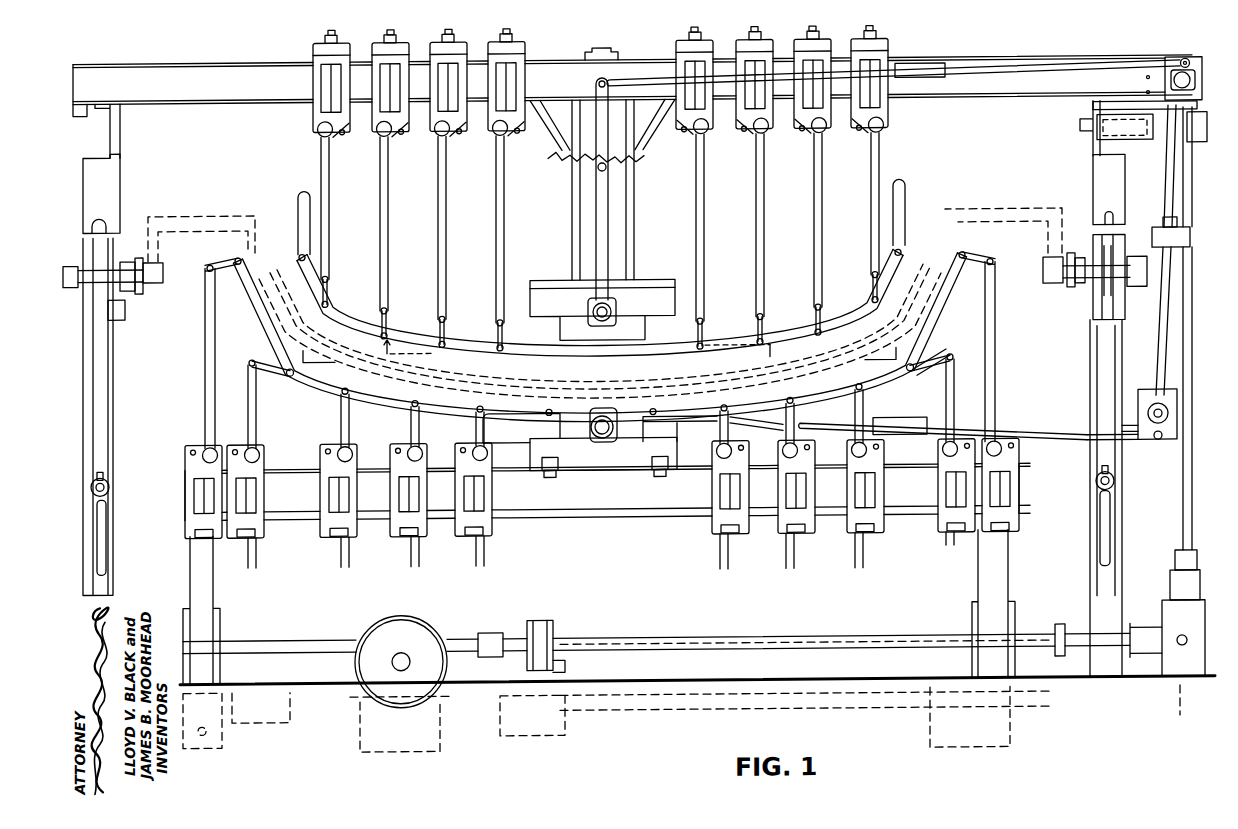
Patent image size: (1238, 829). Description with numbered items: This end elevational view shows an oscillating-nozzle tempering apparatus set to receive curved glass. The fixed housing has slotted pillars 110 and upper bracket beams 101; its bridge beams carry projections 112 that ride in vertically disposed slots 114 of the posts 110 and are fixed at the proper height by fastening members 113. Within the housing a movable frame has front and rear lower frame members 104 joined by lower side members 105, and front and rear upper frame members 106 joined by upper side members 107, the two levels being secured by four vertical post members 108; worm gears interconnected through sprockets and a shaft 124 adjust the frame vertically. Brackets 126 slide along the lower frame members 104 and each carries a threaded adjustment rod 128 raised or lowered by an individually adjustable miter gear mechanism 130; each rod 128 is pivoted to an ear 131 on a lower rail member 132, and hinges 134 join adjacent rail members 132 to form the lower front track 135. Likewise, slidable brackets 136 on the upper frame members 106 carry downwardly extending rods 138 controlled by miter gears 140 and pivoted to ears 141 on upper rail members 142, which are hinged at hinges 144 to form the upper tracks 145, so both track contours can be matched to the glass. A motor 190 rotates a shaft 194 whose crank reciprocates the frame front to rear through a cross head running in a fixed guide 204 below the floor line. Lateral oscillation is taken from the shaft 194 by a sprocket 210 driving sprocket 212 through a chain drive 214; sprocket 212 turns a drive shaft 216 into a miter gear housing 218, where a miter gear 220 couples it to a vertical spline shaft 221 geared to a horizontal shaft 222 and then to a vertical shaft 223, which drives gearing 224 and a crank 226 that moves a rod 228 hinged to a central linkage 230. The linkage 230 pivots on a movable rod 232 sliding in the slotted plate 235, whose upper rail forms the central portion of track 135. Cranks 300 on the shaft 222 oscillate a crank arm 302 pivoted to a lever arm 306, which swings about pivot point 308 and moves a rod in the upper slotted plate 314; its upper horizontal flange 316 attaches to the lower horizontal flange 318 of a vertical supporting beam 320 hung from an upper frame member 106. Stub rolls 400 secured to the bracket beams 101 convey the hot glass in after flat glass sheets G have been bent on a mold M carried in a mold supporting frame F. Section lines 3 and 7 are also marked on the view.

The upper bracket beams 101 is at (110, 315).
The lower frame members 104 is at (626, 491).
The lower side members 105 is at (186, 497).
The upper frame members 106 is at (215, 61).
The upper side members 107 is at (1092, 118).
The vertical post members 108 is at (110, 189).
The slotted pillars 110 is at (113, 580).
The projections 112 is at (110, 485).
The fastening members 113 is at (100, 470).
The slots 114 is at (108, 552).
The shaft 124 is at (315, 638).
The brackets 126 is at (428, 537).
The adjustment rod 128 is at (345, 553).
The miter gear mechanism 130 is at (485, 447).
The ear 131 is at (910, 382).
The lower rail member 132 is at (318, 386).
The hinges 134 is at (798, 392).
The lower front track 135 is at (380, 410).
The slidable brackets 136 is at (392, 138).
The vertically adjustable rods 138 is at (498, 138).
The miter gears 140 is at (322, 121).
The ears 141 is at (862, 292).
The upper rail members 142 is at (795, 330).
The hinges 144 is at (745, 336).
The upper tracks 145 is at (471, 330).
The motor 190 is at (388, 660).
The shaft 194 is at (690, 707).
The fixed guide 204 is at (204, 748).
The sprocket 210 is at (560, 697).
The sprocket 212 is at (560, 630).
The chain drive 214 is at (560, 672).
The drive shaft 216 is at (624, 638).
The miter gear housing 218 is at (1172, 680).
The miter gear 220 is at (1184, 652).
The spline shaft 221 is at (1180, 521).
The horizontal shaft 222 is at (1170, 84).
The vertical shaft 223 is at (1160, 232).
The gearing 224 is at (1142, 395).
The crank 226 is at (1165, 446).
The rod 228 is at (1026, 428).
The central linkage 230 is at (592, 418).
The movable rod 232 is at (606, 438).
The slotted plate 235 is at (640, 447).
The cranks 300 is at (1182, 62).
The crank arm 302 is at (1012, 66).
The lever arm 306 is at (596, 180).
The pivot point 308 is at (606, 170).
The upper slotted plate 314 is at (552, 292).
The upper horizontal flange 316 is at (676, 286).
The lower horizontal flange 318 is at (648, 282).
The vertical supporting beam 320 is at (626, 221).
The stub rolls 400 is at (152, 281).
The mold supporting frame F is at (213, 223).
The glass sheets G is at (936, 244).
The bending mold M is at (258, 257).
The section line 3 is at (597, 356).
The section line 7 is at (575, 350).